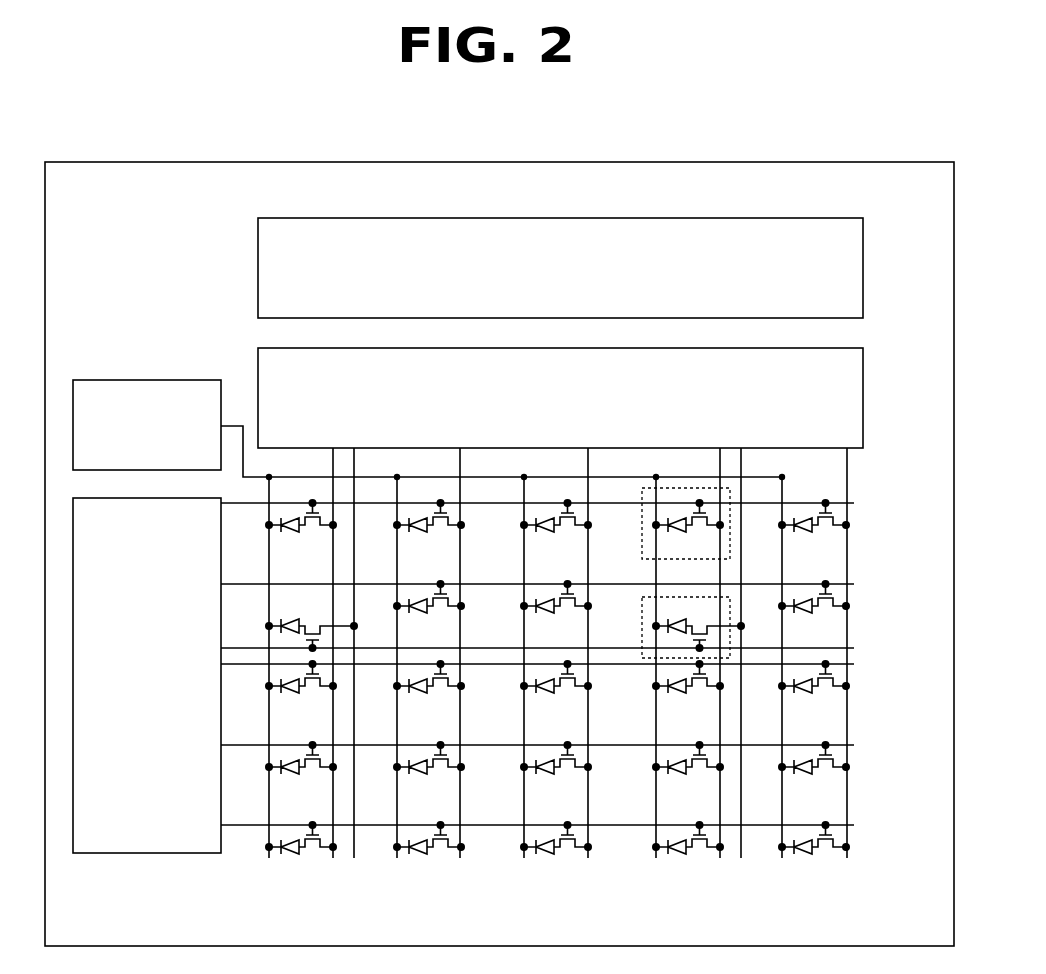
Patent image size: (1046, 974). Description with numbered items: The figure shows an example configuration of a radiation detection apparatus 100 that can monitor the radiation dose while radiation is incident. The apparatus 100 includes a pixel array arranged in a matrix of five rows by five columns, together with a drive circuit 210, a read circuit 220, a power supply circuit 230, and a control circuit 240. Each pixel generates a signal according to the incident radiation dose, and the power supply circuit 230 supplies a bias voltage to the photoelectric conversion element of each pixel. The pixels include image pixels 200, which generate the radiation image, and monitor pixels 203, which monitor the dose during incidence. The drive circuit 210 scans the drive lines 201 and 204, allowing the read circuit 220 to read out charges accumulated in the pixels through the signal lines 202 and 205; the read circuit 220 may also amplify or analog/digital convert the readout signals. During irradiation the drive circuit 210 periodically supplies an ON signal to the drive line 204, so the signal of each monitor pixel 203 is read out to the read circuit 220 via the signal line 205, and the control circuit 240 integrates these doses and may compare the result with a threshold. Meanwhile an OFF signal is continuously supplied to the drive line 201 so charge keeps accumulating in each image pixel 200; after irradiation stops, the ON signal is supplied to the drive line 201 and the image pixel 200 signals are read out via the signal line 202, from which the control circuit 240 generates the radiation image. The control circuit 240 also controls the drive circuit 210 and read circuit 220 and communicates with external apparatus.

The radiation detection apparatus 100 is at (623, 162).
The image pixel 200 is at (642, 530).
The drive line 201 is at (492, 505).
The signal line 202 is at (720, 574).
The monitor pixel 203 is at (642, 601).
The drive line 204 is at (492, 646).
The signal line 205 is at (741, 638).
The drive circuit 210 is at (142, 856).
The read circuit 220 is at (863, 395).
The power supply circuit 230 is at (148, 380).
The control circuit 240 is at (863, 255).